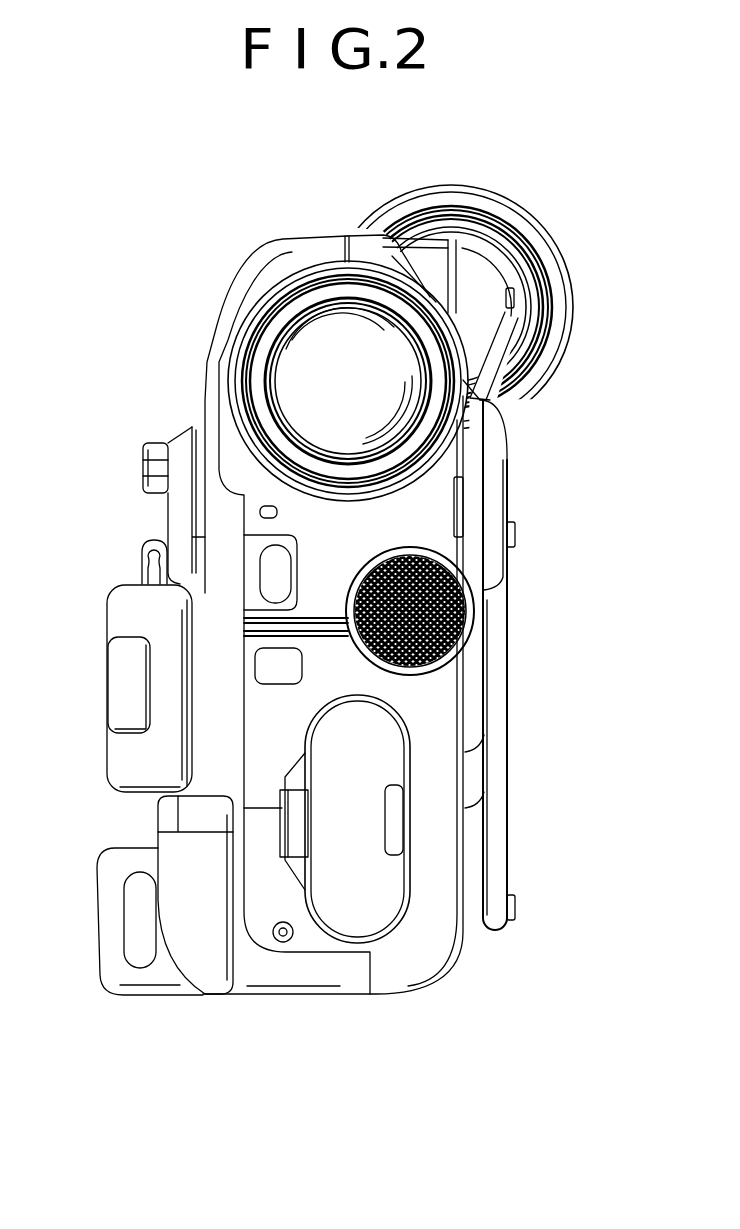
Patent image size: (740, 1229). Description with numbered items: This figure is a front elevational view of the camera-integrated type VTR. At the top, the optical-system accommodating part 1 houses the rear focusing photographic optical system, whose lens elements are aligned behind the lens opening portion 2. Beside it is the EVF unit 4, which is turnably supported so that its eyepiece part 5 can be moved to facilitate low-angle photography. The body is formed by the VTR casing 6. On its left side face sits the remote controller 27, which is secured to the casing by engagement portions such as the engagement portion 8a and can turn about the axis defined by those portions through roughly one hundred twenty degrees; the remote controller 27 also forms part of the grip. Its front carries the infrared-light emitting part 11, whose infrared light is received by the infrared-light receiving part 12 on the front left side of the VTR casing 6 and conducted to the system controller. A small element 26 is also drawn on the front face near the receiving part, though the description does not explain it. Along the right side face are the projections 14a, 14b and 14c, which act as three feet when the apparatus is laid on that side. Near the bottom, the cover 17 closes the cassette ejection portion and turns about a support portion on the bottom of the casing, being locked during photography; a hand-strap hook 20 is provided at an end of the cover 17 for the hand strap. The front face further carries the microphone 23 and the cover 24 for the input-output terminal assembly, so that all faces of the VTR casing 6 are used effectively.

The optical-system accommodating part 1 is at (288, 250).
The lens opening portion 2 is at (303, 367).
The EVF unit 4 is at (478, 278).
The eyepiece part 5 is at (537, 373).
The VTR casing 6 is at (470, 735).
The engagement portion 8a is at (150, 548).
The infrared-light emitting part 11 is at (120, 680).
The infrared-light receiving part 12 is at (278, 574).
The projection 14a is at (514, 297).
The projection 14b is at (516, 531).
The projection 14c is at (516, 908).
The cover 17 is at (207, 955).
The hand-strap hook 20 is at (137, 902).
The microphone 23 is at (466, 601).
The cover 24 is at (375, 890).
The indicator lamp 26 is at (268, 508).
The remote controller 27 is at (128, 757).